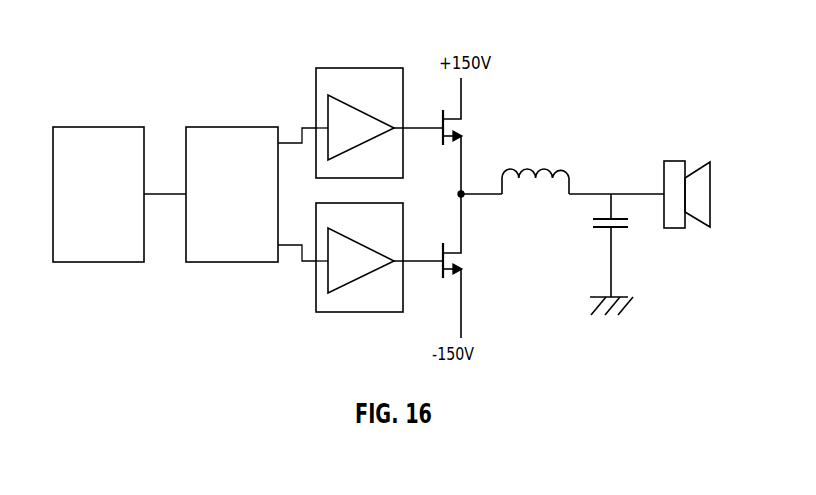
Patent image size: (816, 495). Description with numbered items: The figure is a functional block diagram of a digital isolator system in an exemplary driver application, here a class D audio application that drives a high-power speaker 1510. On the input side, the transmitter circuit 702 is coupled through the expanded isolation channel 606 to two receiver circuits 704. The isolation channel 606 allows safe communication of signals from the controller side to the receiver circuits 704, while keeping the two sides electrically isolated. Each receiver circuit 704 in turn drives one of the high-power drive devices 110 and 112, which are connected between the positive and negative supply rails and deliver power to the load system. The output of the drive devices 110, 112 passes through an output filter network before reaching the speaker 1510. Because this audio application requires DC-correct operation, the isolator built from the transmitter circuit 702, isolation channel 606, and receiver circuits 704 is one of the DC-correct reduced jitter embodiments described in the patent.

The transmitter circuit 702 is at (112, 204).
The expanded isolation channel 606 is at (245, 219).
The receiver circuit 704 is at (350, 92).
The high-power drive device 110 is at (461, 119).
The high-power drive device 112 is at (461, 253).
The high-power speaker 1510 is at (680, 161).